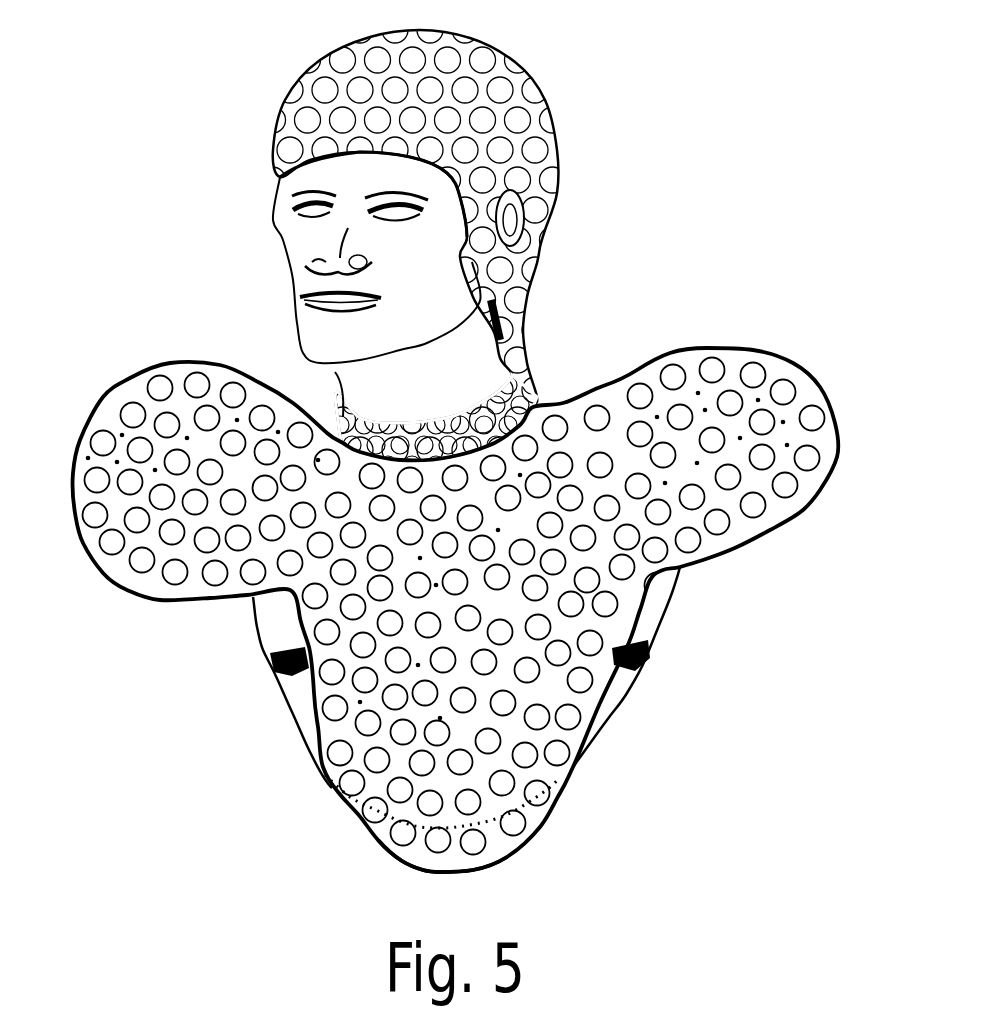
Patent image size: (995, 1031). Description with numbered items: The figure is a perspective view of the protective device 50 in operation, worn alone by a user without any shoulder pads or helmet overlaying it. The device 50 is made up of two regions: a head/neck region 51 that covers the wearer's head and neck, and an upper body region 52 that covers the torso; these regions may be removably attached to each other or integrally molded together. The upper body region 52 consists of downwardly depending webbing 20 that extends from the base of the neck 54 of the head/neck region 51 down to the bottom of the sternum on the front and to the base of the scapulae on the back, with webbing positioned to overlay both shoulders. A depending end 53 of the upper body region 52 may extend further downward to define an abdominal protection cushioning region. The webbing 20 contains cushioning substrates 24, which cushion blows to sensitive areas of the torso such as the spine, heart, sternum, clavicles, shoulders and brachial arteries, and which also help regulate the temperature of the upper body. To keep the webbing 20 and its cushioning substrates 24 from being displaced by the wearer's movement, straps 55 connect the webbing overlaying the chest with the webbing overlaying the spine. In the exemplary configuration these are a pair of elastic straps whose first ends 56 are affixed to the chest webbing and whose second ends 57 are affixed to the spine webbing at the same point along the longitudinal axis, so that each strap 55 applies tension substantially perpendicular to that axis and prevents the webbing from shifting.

The downwardly depending webbing 20 is at (537, 813).
The cushioning substrates 24 is at (215, 583).
The device 50 is at (456, 630).
The head/neck region 51 is at (501, 245).
The upper body region 52 is at (103, 602).
The depending end 53 is at (432, 865).
The base of the neck 54 is at (456, 630).
The straps 55 is at (496, 694).
The first ends 56 is at (616, 682).
The second ends 57 is at (660, 660).